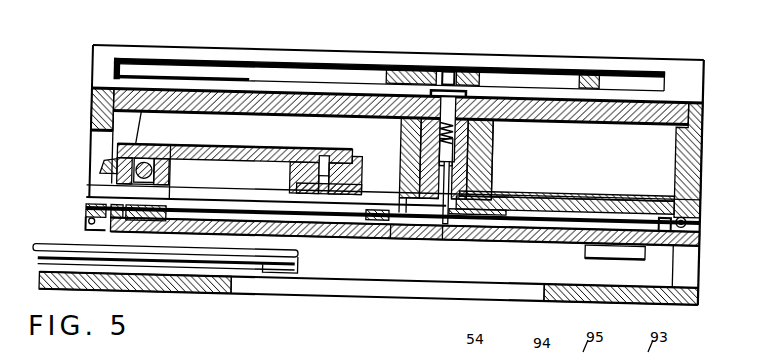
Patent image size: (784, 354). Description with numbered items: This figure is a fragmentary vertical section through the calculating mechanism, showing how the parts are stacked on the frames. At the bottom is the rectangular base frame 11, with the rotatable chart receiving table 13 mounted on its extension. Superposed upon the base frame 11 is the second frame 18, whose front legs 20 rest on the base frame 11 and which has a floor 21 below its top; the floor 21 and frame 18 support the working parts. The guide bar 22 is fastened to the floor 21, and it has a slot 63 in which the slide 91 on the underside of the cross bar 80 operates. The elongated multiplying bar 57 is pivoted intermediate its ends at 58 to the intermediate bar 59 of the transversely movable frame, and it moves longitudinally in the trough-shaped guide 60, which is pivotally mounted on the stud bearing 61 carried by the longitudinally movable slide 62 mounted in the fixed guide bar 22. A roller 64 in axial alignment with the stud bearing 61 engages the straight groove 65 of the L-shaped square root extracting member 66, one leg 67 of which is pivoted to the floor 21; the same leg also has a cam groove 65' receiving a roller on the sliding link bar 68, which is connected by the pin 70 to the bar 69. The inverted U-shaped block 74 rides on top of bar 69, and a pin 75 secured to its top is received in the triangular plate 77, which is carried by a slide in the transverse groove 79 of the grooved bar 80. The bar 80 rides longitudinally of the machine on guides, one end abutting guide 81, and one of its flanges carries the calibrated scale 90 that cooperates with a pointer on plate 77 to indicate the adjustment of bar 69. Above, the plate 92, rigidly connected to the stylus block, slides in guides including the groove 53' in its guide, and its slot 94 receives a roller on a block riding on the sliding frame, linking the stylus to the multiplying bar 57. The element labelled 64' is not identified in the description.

The base frame 11 is at (682, 292).
The chart receiving table 13 is at (262, 267).
The second frame 18 is at (97, 105).
The legs 20 is at (100, 153).
The floor 21 is at (700, 222).
The guide bar 22 is at (700, 175).
The groove 53' is at (389, 54).
The multiplying bar 57 is at (465, 125).
The pivot 58 is at (447, 100).
The intermediate bar 59 is at (328, 157).
The trough-shaped guide 60 is at (532, 100).
The stud bearing 61 is at (497, 150).
The slide 62 is at (558, 197).
The slot 63 is at (227, 197).
The roller 64 is at (474, 264).
The lower strip 64' is at (412, 263).
The straight groove 65 is at (437, 242).
The cam groove 65' is at (382, 241).
The square root extracting member 66 is at (500, 232).
The leg 67 is at (580, 222).
The sliding link bar 68 is at (360, 210).
The bar 69 is at (358, 153).
The pin 70 is at (323, 210).
The inverted U-shaped block 74 is at (297, 147).
The pin 75 is at (350, 152).
The triangular plate 77 is at (203, 147).
The transverse groove 79 is at (158, 158).
The grooved bar 80 is at (181, 174).
The guide 81 is at (248, 191).
The calibrated scale 90 is at (108, 165).
The slide 91 is at (90, 214).
The plate 92 is at (402, 67).
The slot 94 is at (457, 66).